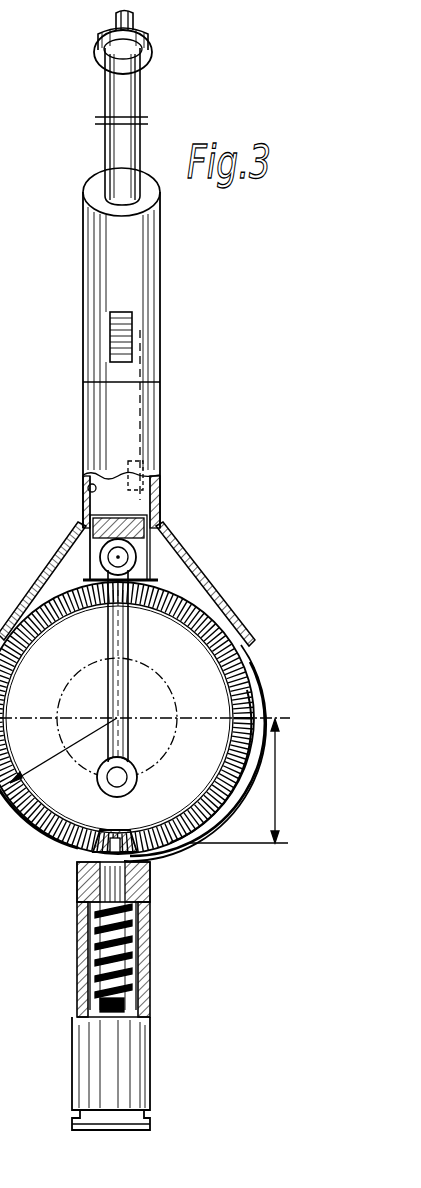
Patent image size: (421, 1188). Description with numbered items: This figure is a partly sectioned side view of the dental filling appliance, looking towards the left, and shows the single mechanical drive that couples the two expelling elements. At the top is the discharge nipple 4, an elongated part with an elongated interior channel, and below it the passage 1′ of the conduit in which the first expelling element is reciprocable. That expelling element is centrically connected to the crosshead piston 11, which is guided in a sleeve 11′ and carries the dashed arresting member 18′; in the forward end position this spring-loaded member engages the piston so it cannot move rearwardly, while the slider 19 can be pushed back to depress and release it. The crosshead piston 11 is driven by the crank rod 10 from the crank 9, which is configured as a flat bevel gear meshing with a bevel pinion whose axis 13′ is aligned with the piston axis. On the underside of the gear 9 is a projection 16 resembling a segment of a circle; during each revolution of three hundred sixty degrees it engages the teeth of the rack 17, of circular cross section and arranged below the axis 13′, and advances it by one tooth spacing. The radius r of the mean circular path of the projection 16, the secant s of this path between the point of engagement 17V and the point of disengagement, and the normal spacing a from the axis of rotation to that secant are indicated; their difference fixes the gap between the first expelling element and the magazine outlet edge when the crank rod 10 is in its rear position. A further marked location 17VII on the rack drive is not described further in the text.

The discharge nipple 4 is at (148, 40).
The passage of a conduit 1′ is at (138, 100).
The sleeve 11′ is at (82, 480).
The slider 19 is at (132, 325).
The arresting member 18′ is at (143, 468).
The crosshead piston 11 is at (150, 515).
The crank 9 is at (197, 648).
The crank rod 10 is at (118, 598).
The radius of the mean circular path r is at (63, 750).
The normal spacing a is at (239, 781).
The secant s is at (106, 832).
The projection 16 is at (62, 845).
The point of engagement 17V is at (140, 890).
The spring housing 17VII is at (95, 908).
The rack 17 is at (132, 968).
The axis of the pinion 13′ is at (124, 1004).